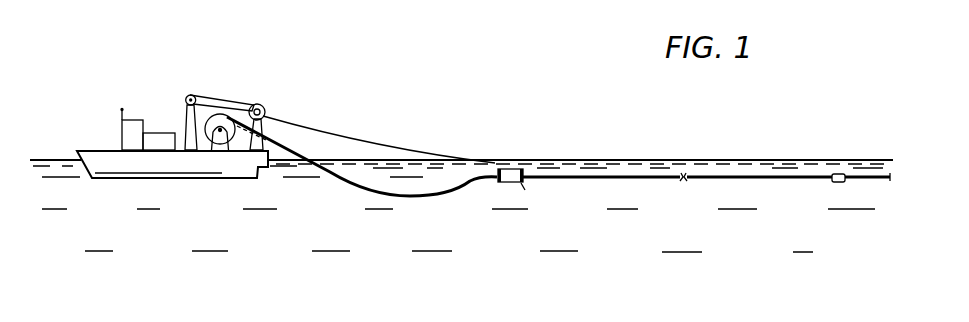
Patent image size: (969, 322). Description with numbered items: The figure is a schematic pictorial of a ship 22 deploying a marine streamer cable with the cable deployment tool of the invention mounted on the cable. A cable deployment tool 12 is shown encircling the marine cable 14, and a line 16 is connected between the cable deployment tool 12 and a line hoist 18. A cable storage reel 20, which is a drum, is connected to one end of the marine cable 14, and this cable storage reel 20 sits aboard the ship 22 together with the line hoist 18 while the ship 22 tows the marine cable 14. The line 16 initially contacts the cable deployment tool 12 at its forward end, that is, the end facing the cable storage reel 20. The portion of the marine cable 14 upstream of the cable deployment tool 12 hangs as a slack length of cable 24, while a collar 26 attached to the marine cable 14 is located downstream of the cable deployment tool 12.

The cable deployment tool 12 is at (528, 162).
The marine cable 14 is at (610, 176).
The line 16 is at (392, 146).
The line hoist 18 is at (261, 104).
The cable storage reel 20 is at (221, 115).
The ship 22 is at (95, 154).
The slack length of cable 24 is at (334, 172).
The collar 26 is at (837, 173).